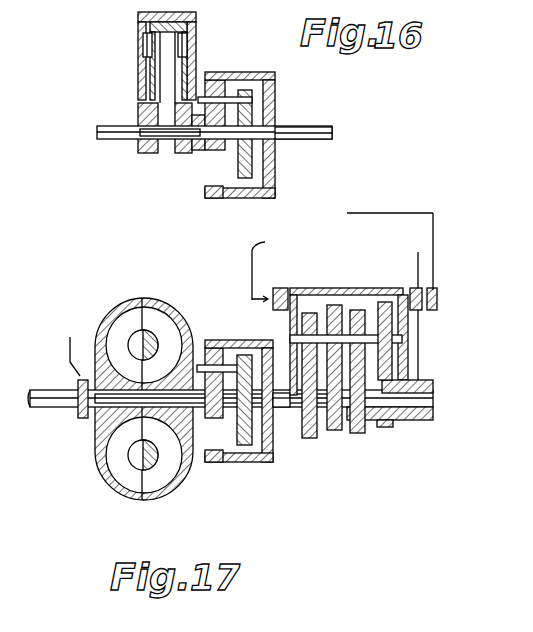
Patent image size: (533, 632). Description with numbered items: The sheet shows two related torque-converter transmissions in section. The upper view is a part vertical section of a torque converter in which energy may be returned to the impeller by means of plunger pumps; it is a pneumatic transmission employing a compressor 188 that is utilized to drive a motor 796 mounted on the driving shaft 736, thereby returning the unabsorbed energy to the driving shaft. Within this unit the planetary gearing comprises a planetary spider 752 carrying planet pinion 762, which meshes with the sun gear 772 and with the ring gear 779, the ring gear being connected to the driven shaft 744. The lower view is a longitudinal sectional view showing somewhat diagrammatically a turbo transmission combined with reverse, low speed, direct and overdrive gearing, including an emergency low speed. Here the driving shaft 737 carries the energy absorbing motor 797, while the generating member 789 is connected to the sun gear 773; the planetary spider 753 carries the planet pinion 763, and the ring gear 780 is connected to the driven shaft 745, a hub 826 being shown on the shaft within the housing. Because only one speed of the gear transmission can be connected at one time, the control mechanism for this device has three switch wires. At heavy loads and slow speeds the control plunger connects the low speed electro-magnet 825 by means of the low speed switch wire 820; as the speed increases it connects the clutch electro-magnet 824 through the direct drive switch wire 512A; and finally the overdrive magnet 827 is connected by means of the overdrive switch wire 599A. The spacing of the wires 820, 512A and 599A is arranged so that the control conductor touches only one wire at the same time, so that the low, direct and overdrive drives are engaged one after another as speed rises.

In FIG. 16, the motor 796 is at (138, 71).
In FIG. 16, the inner cup with pins 188 is at (187, 58).
In FIG. 16, the ring gear 779 is at (214, 79).
In FIG. 16, the planet pinion 762 is at (247, 74).
In FIG. 16, the planetary spider 752 is at (247, 163).
In FIG. 16, the sun gear 772 is at (223, 119).
In FIG. 16, the driving shaft 736 is at (97, 132).
In FIG. 16, the driven shaft 744 is at (332, 133).
In FIG. 17, the motor 797 is at (108, 320).
In FIG. 17, the generator 789 is at (146, 310).
In FIG. 17, the lower hub 826 is at (137, 458).
In FIG. 17, the driving shaft 737 is at (75, 391).
In FIG. 17, the ring gear 780 is at (206, 343).
In FIG. 17, the planet pinion 763 is at (222, 347).
In FIG. 17, the planetary spider 753 is at (242, 461).
In FIG. 17, the sun gear 773 is at (215, 418).
In FIG. 17, the driven shaft 745 is at (292, 415).
In FIG. 17, the overdrive magnet 827 is at (278, 288).
In FIG. 17, the low speed electro-magnet 825 is at (412, 288).
In FIG. 17, the low speed switch wire 820 is at (418, 262).
In FIG. 17, the clutch electro-magnet 824 is at (433, 290).
In FIG. 17, the overdrive switch wire 599A is at (284, 266).
In FIG. 17, the direct drive switch wire 512A is at (384, 212).